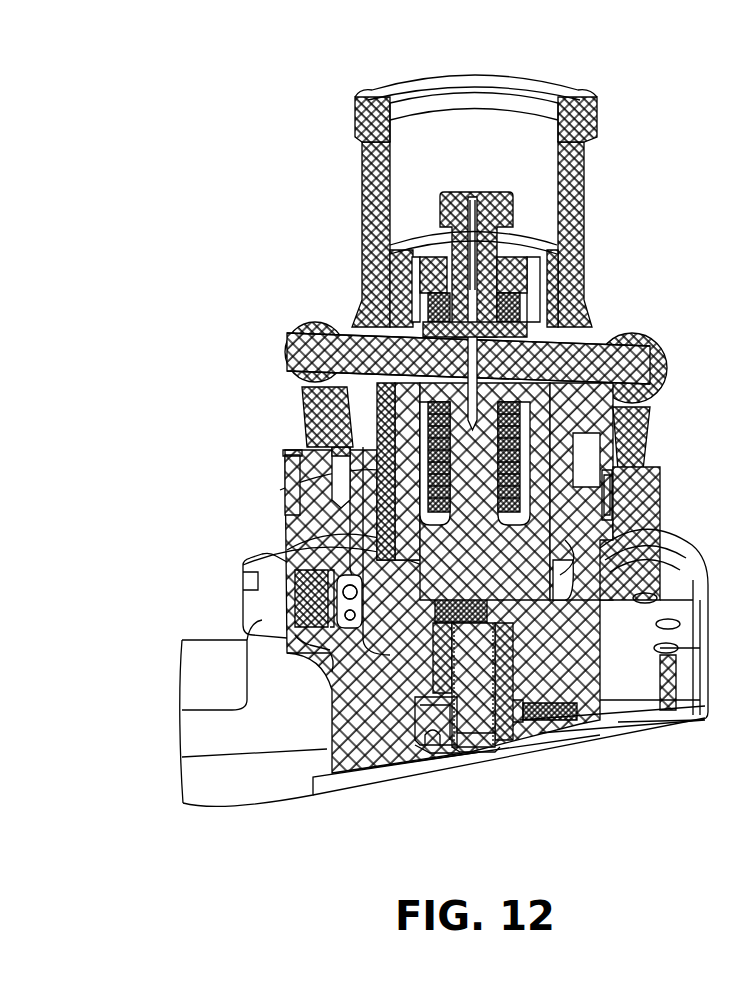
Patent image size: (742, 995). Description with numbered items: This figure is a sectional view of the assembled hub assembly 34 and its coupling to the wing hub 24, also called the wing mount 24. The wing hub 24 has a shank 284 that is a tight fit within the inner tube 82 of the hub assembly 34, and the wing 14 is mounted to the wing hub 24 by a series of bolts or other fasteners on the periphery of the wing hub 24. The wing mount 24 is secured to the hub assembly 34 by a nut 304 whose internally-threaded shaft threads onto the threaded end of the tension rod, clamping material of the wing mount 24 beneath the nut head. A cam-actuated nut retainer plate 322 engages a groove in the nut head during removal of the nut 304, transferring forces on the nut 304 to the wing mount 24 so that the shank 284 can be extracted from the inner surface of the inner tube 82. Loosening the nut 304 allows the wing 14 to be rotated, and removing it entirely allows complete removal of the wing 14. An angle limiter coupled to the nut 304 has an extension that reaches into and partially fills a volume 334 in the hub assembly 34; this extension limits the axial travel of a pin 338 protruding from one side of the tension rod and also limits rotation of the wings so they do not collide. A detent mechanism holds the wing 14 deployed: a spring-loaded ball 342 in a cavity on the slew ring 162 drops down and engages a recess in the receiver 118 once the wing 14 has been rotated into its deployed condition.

The wing 14 is at (232, 782).
The wing hub 24 is at (352, 730).
The hub assembly 34 is at (318, 200).
The inner tube 82 is at (567, 213).
The receiver 118 is at (328, 630).
The slew ring 162 is at (297, 513).
The shank 284 is at (407, 490).
The nut 304 is at (520, 742).
The nut retainer plate 322 is at (565, 714).
The volume 334 is at (248, 590).
The pin 338 is at (434, 716).
The spring-loaded ball 342 is at (343, 590).